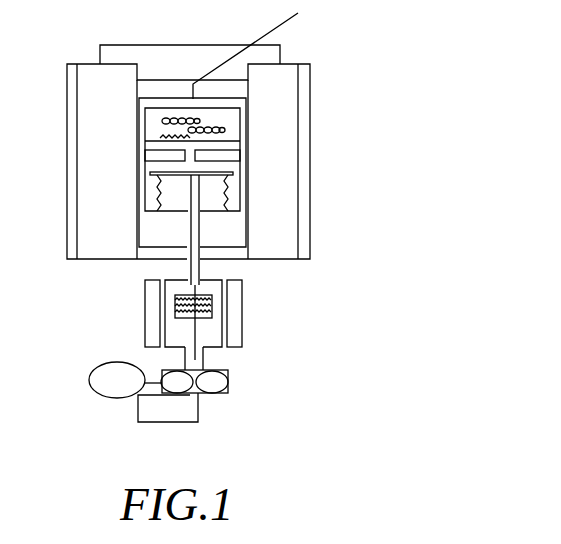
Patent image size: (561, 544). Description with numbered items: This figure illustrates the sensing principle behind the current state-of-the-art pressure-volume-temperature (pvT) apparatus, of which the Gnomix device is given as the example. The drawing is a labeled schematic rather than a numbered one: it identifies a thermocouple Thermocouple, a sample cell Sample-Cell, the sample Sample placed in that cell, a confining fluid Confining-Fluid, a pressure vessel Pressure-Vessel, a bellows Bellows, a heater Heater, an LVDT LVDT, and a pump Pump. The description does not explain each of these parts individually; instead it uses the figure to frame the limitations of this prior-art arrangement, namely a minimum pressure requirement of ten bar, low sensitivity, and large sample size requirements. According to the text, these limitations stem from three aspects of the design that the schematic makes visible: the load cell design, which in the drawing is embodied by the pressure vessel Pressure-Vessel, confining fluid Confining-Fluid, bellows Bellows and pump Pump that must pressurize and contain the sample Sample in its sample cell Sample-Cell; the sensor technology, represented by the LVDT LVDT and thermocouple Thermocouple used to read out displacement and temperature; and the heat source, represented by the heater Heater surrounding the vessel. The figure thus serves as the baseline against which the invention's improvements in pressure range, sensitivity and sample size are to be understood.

The thermocouple Thermocouple is at (286, 36).
The sample cell Sample-Cell is at (250, 92).
The sample Sample is at (211, 116).
The confining fluid Confining-Fluid is at (221, 139).
The pressure vessel Pressure-Vessel is at (278, 165).
The bellows Bellows is at (160, 188).
The heater Heater is at (311, 233).
The LVDT (linear variable differential transformer) LVDT is at (245, 310).
The pump Pump is at (235, 381).